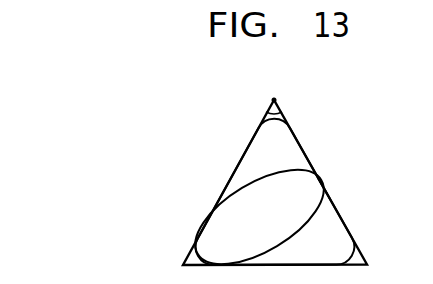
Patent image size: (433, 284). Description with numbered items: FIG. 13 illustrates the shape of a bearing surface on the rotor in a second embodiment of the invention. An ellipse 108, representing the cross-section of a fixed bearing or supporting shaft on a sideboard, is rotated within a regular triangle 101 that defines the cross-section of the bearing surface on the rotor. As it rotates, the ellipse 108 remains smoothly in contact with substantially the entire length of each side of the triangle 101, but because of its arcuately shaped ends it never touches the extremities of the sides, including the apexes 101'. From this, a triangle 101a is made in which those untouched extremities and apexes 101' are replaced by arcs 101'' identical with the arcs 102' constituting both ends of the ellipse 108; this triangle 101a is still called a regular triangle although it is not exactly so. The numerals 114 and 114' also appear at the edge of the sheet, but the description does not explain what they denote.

The regular triangle 101 is at (275, 182).
The triangle 101a is at (262, 160).
The apexes 101' is at (305, 86).
The arcs 101'' is at (244, 91).
The arcs 102' is at (354, 196).
The ellipse 108 is at (253, 222).
The element 114 is at (421, 157).
The element 114 prime 114' is at (417, 254).